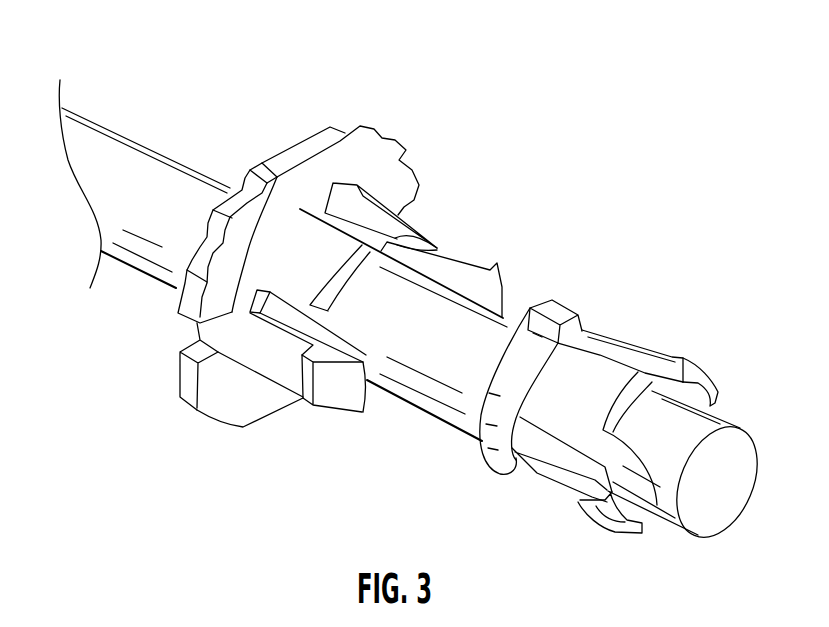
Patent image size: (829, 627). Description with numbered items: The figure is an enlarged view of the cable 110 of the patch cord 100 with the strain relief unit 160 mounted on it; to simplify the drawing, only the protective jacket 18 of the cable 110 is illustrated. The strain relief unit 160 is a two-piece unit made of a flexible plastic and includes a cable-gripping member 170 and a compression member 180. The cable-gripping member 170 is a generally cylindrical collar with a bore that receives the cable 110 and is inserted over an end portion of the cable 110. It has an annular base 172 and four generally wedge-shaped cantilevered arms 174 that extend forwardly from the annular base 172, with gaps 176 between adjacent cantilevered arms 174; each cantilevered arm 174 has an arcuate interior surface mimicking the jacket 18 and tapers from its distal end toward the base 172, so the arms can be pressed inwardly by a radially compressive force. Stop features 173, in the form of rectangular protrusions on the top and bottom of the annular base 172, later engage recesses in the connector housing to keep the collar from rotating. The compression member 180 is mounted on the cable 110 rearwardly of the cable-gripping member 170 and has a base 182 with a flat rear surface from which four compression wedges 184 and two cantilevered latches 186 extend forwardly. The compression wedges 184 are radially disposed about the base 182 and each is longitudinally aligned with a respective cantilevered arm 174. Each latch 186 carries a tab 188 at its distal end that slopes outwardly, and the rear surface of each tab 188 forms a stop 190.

The patch cord 100 is at (474, 72).
The protective jacket 18 is at (88, 118).
The cable 110 is at (112, 230).
The compression member 180 is at (452, 183).
The compression wedges 184 is at (355, 212).
The stop 190 is at (478, 260).
The tab 188 is at (333, 377).
The base 182 is at (185, 390).
The cantilevered latches 186 is at (278, 363).
The strain relief unit 160 is at (685, 224).
The cable-gripping member 170 is at (600, 300).
The stop features 173 is at (558, 306).
The annular base 172 is at (484, 440).
The cantilevered arms 174 is at (680, 357).
The gaps 176 is at (540, 443).